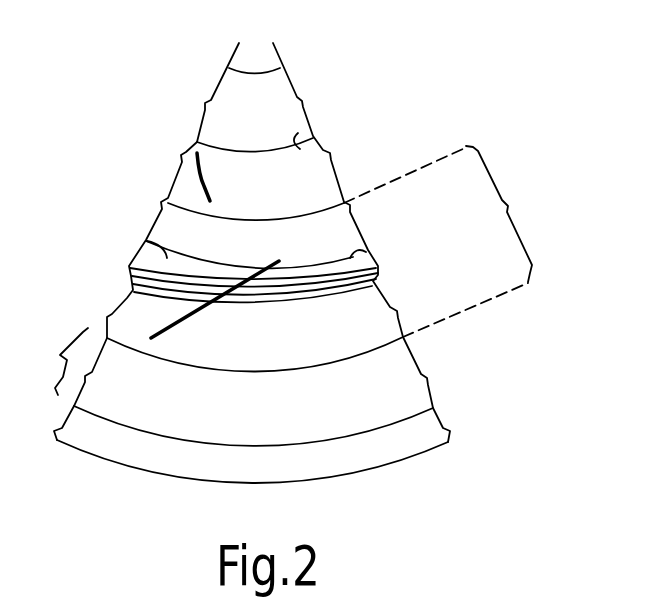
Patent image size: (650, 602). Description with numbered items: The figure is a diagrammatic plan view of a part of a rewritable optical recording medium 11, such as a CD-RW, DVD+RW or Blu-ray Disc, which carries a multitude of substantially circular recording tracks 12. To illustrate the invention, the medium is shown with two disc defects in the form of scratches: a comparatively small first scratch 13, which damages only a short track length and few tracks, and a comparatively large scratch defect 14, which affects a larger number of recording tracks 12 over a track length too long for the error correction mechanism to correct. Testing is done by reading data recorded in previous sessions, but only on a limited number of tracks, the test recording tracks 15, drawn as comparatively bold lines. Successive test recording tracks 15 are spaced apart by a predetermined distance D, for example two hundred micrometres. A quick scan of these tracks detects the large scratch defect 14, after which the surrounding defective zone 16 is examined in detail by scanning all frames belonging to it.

The rewritable optical recording medium 11 is at (296, 86).
The recording tracks 12 is at (153, 234).
The first scratch 13 is at (198, 176).
The large scratch defect 14 is at (178, 315).
The test recording tracks 15 is at (299, 134).
The defective zone 16 is at (441, 241).
The predetermined distance D is at (63, 361).